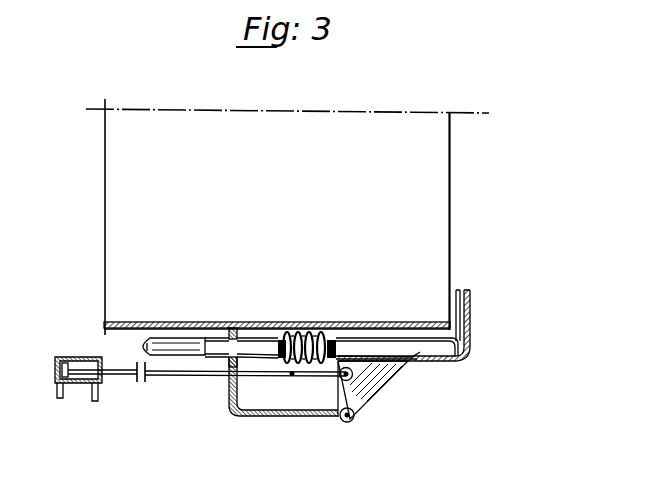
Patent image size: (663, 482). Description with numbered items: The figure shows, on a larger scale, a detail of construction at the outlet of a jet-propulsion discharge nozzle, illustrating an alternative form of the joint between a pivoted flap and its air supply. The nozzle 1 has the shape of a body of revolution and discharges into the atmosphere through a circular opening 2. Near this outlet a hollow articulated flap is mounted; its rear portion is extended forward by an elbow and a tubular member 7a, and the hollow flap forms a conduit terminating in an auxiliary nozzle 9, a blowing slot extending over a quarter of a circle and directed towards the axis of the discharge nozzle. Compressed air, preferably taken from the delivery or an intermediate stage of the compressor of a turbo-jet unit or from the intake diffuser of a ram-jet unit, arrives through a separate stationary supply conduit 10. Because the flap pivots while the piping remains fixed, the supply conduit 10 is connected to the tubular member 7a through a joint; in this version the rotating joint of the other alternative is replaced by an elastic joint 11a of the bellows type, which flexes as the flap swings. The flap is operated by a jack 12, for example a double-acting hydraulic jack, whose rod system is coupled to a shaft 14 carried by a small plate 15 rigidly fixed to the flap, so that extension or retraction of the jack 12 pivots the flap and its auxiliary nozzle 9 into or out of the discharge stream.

The nozzle 1 is at (402, 326).
The circular opening 2 is at (450, 193).
The tubular member 7a is at (422, 348).
The auxiliary nozzle 9 is at (463, 289).
The supply conduit 10 is at (146, 350).
The elastic joint 11a is at (310, 364).
The jack 12 is at (78, 384).
The shaft 14 is at (350, 422).
The small plate 15 is at (364, 393).